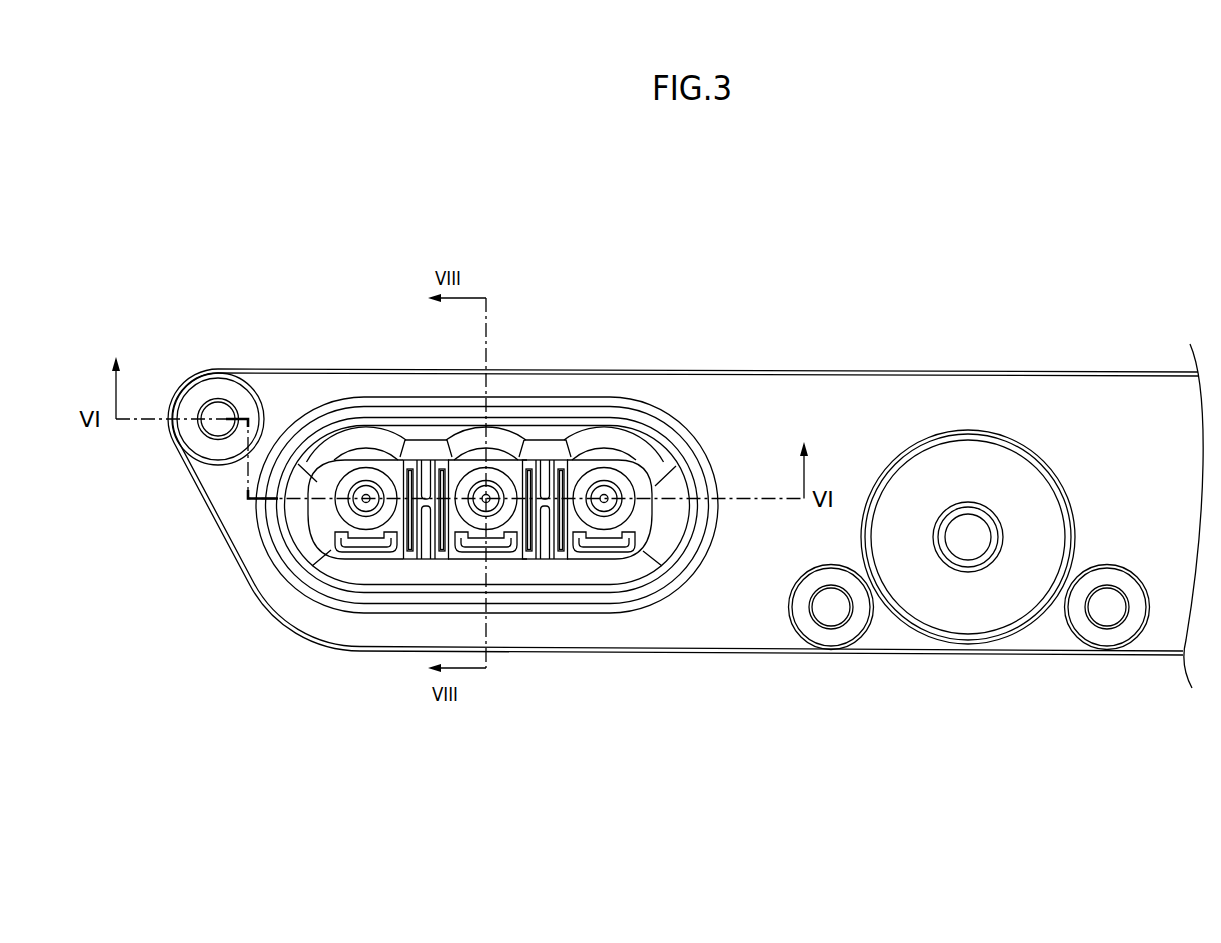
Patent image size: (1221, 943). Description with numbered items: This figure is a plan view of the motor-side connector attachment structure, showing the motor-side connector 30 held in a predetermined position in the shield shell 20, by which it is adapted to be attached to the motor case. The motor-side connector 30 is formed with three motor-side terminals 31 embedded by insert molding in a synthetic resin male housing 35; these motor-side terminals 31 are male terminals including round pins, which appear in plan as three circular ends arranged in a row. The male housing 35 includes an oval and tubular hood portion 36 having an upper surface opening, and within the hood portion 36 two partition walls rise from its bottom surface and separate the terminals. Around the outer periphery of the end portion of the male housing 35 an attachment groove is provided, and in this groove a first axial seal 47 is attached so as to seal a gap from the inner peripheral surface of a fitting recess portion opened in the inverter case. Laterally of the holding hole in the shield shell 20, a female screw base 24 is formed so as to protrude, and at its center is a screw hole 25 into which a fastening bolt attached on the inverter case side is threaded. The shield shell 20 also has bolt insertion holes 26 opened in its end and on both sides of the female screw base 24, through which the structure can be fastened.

The shield shell 20 is at (972, 373).
The female screw base 24 is at (953, 600).
The screw hole 25 is at (978, 554).
The bolt insertion holes 26 is at (212, 427).
The motor-side connector 30 is at (487, 427).
The motor-side terminals 31 is at (363, 495).
The male housing 35 is at (600, 413).
The hood portion 36 is at (556, 415).
The first axial seal 47 is at (531, 397).